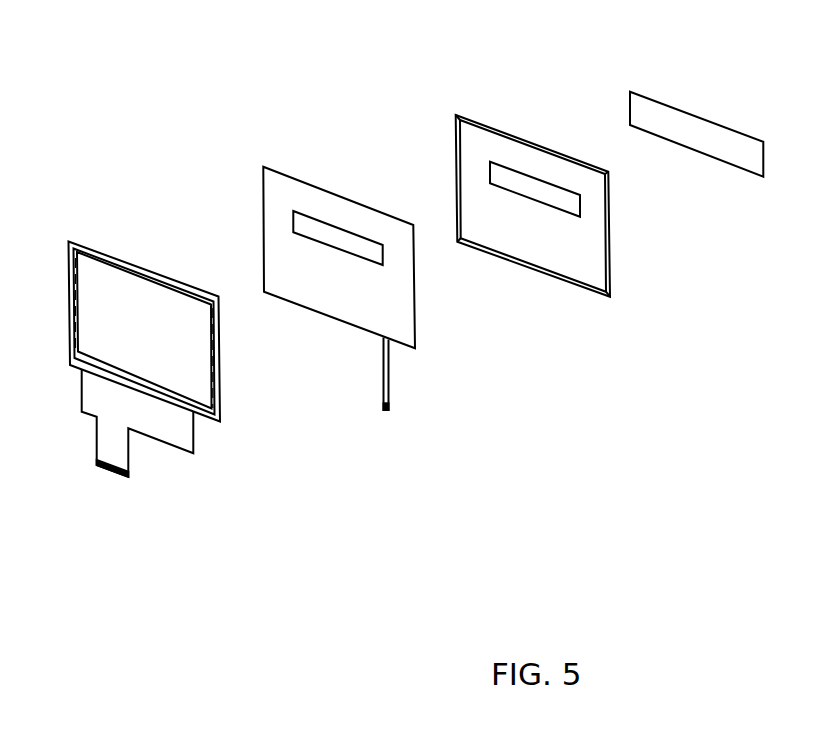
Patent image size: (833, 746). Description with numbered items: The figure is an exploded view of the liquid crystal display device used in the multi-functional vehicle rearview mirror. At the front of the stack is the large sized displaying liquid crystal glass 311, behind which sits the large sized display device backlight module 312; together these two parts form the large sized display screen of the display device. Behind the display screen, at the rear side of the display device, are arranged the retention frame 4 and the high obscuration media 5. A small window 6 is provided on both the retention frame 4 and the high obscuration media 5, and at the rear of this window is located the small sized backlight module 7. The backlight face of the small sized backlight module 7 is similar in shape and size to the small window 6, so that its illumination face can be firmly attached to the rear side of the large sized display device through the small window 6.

The retention frame 4 is at (245, 505).
The large sized displaying liquid crystal glass 311 is at (325, 458).
The large sized display device backlight module 312 is at (468, 437).
The high obscuration media 5 is at (663, 377).
The small window 6 is at (532, 183).
The small sized backlight module 7 is at (782, 250).